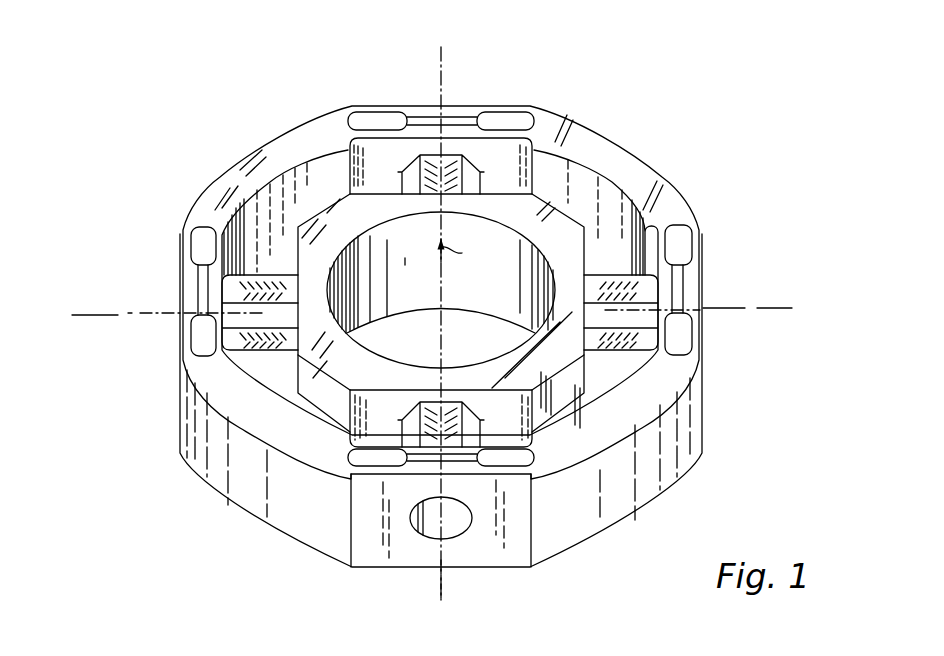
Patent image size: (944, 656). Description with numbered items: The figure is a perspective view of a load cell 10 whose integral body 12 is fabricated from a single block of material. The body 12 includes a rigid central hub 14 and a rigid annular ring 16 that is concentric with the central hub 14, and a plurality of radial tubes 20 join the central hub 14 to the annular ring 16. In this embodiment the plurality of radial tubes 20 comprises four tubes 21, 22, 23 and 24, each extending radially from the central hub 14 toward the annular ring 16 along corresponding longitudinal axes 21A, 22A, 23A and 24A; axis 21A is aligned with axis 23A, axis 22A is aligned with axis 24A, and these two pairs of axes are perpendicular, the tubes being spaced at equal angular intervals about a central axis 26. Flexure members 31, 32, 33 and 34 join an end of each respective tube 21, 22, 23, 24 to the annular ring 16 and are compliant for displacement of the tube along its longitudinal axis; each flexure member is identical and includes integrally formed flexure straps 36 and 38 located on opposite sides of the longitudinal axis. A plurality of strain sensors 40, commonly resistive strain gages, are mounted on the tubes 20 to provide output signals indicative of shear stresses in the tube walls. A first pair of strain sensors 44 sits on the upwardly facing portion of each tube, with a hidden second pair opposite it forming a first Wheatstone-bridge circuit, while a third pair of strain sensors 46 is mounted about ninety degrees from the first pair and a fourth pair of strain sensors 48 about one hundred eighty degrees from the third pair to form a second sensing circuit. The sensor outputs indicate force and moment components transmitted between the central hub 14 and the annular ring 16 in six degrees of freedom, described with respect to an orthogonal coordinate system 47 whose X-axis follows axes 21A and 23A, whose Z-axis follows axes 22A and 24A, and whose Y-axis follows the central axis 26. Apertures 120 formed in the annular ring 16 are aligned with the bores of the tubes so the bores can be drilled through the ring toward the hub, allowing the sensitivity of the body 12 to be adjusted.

The load cell 10 is at (632, 107).
The integral body 12 is at (232, 121).
The rigid central hub 14 is at (535, 208).
The rigid annular ring 16 is at (643, 157).
The plurality of radial tubes 20 is at (387, 180).
The tube 21 is at (481, 172).
The longitudinal axis 21A is at (438, 52).
The tube 22 is at (603, 348).
The longitudinal axis 22A is at (733, 308).
The tube 23 is at (474, 430).
The longitudinal axis 23A is at (445, 579).
The tube 24 is at (246, 354).
The longitudinal axis 24A is at (106, 313).
The central axis 26 is at (443, 318).
The flexure member 31 is at (545, 113).
The flexure member 32 is at (676, 240).
The flexure member 33 is at (365, 462).
The flexure member 34 is at (203, 244).
The flexure strap 36 is at (370, 111).
The flexure strap 38 is at (512, 118).
The strain sensors 40 is at (283, 121).
The first pair of strain sensors 44 is at (443, 177).
The third pair of strain sensors 46 is at (234, 342).
The orthogonal coordinate system 47 is at (722, 165).
The fourth pair of strain sensors 48 is at (639, 337).
The apertures 120 is at (420, 522).